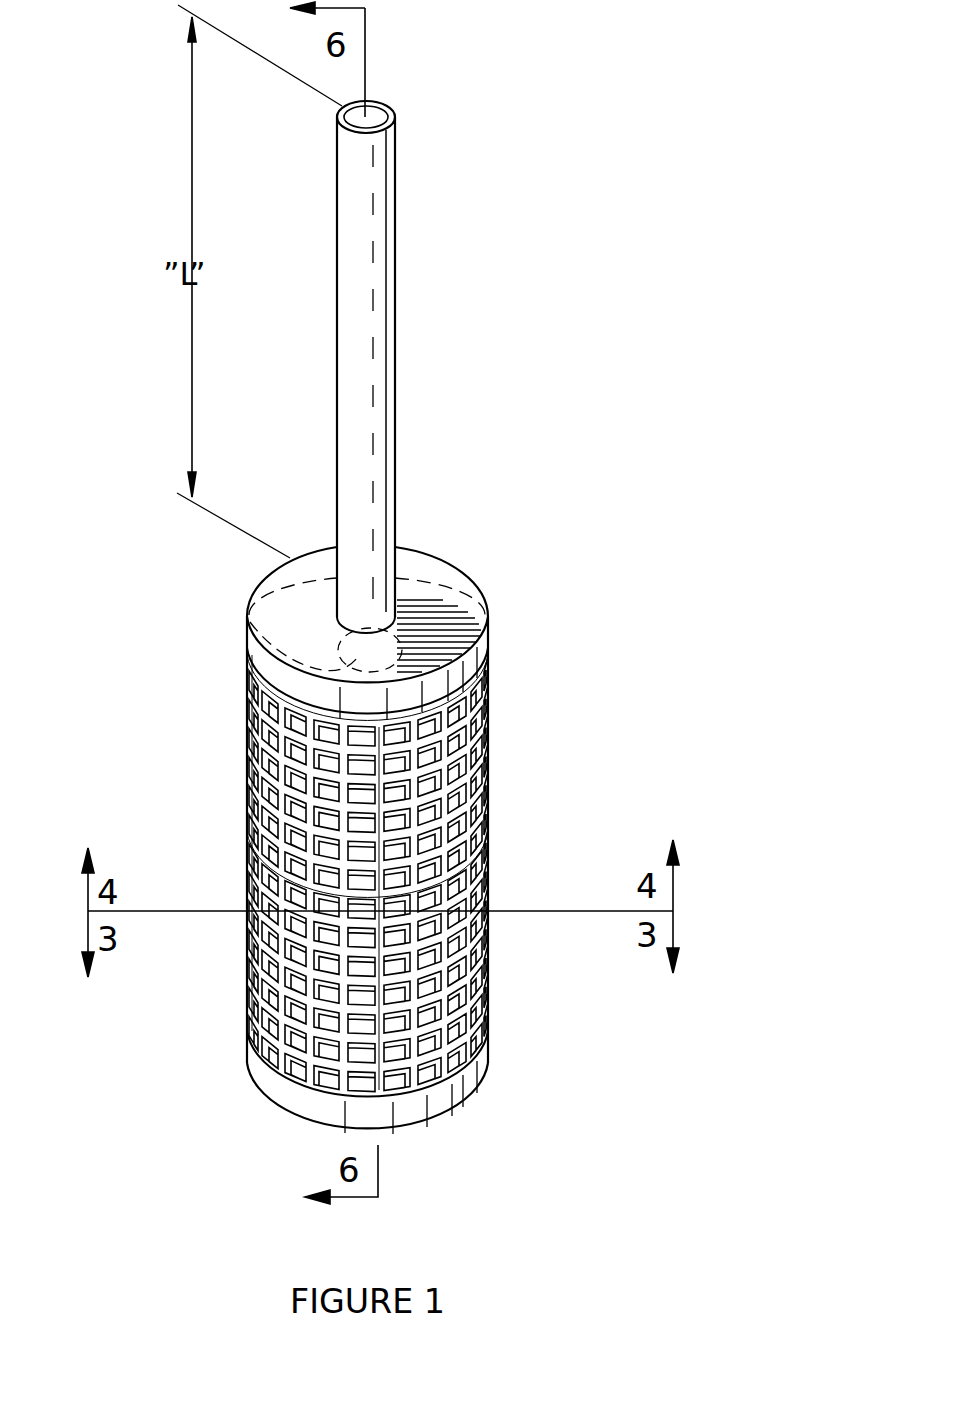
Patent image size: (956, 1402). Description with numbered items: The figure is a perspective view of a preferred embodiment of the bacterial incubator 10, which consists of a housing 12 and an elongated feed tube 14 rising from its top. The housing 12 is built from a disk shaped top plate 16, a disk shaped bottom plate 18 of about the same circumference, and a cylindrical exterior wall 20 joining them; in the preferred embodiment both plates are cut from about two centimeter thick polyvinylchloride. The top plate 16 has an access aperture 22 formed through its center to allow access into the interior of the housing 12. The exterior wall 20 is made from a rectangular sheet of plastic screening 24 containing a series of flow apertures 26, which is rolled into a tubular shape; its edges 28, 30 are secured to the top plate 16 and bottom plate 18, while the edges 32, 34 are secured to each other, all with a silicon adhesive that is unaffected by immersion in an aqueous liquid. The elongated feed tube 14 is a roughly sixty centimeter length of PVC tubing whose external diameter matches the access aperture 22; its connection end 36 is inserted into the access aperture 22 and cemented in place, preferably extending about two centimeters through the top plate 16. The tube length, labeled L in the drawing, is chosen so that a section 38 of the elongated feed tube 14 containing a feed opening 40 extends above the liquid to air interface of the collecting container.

The bacterial incubator 10 is at (545, 602).
The housing 12 is at (645, 799).
The elongated feed tube 14 is at (490, 322).
The top plate 16 is at (450, 650).
The bottom plate 18 is at (473, 1087).
The exterior wall 20 is at (490, 958).
The access aperture 22 is at (249, 612).
The plastic screening 24 is at (252, 708).
The flow apertures 26 is at (268, 1010).
The edge 28 is at (437, 708).
The edge 30 is at (300, 1085).
The edge 32 is at (392, 848).
The edge 34 is at (363, 848).
The connection end 36 is at (338, 622).
The section 38 is at (395, 210).
The feed opening 40 is at (383, 103).